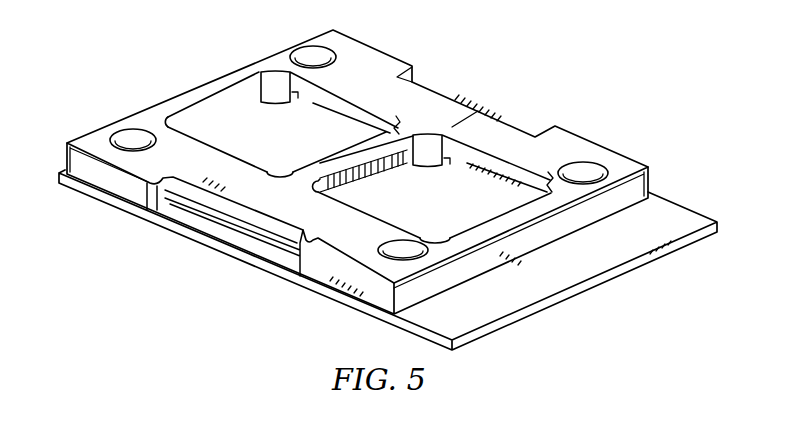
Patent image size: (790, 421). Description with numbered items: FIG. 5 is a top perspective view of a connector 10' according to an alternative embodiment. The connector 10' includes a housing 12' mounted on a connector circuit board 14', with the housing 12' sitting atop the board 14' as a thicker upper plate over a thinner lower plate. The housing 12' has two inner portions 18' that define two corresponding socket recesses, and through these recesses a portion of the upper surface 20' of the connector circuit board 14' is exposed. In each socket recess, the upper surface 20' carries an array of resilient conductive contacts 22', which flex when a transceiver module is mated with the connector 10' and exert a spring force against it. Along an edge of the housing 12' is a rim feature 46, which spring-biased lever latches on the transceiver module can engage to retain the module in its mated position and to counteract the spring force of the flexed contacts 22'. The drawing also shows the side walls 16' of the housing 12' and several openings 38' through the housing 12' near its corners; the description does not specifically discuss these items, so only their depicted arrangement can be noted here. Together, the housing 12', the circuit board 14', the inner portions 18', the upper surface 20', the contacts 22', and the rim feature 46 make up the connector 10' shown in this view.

The connector 10' is at (378, 176).
The housing 12' is at (357, 156).
The connector circuit board 14' is at (388, 260).
The side wall 16' is at (378, 228).
The inner portion 18' is at (359, 155).
The upper surface 20' is at (407, 131).
The resilient conductive contact 22' is at (390, 147).
The mounting hole 38' is at (356, 131).
The rim feature 46 is at (222, 218).